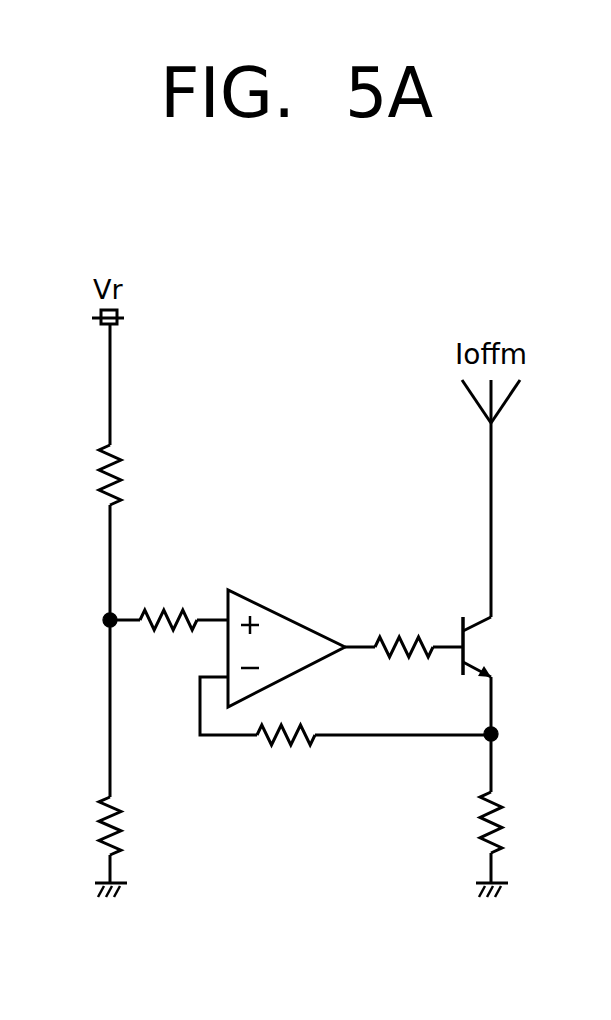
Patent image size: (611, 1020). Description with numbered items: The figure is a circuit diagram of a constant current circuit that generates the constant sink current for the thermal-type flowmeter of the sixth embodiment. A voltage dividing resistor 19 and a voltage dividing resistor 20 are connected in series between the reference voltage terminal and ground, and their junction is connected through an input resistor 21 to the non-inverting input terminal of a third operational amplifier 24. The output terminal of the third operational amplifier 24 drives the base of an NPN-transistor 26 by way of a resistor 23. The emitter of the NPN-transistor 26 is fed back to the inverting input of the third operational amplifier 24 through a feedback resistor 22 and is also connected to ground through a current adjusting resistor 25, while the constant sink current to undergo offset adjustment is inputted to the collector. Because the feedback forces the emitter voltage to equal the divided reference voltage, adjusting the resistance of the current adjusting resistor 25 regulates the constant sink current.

The voltage dividing resistor 19 is at (126, 471).
The voltage dividing resistor 20 is at (128, 826).
The input resistor 21 is at (170, 605).
The feedback resistor 22 is at (287, 752).
The resistor 23 is at (405, 626).
The third operational amplifier 24 is at (286, 617).
The current adjusting resistor 25 is at (510, 823).
The NPN-transistor 26 is at (496, 646).